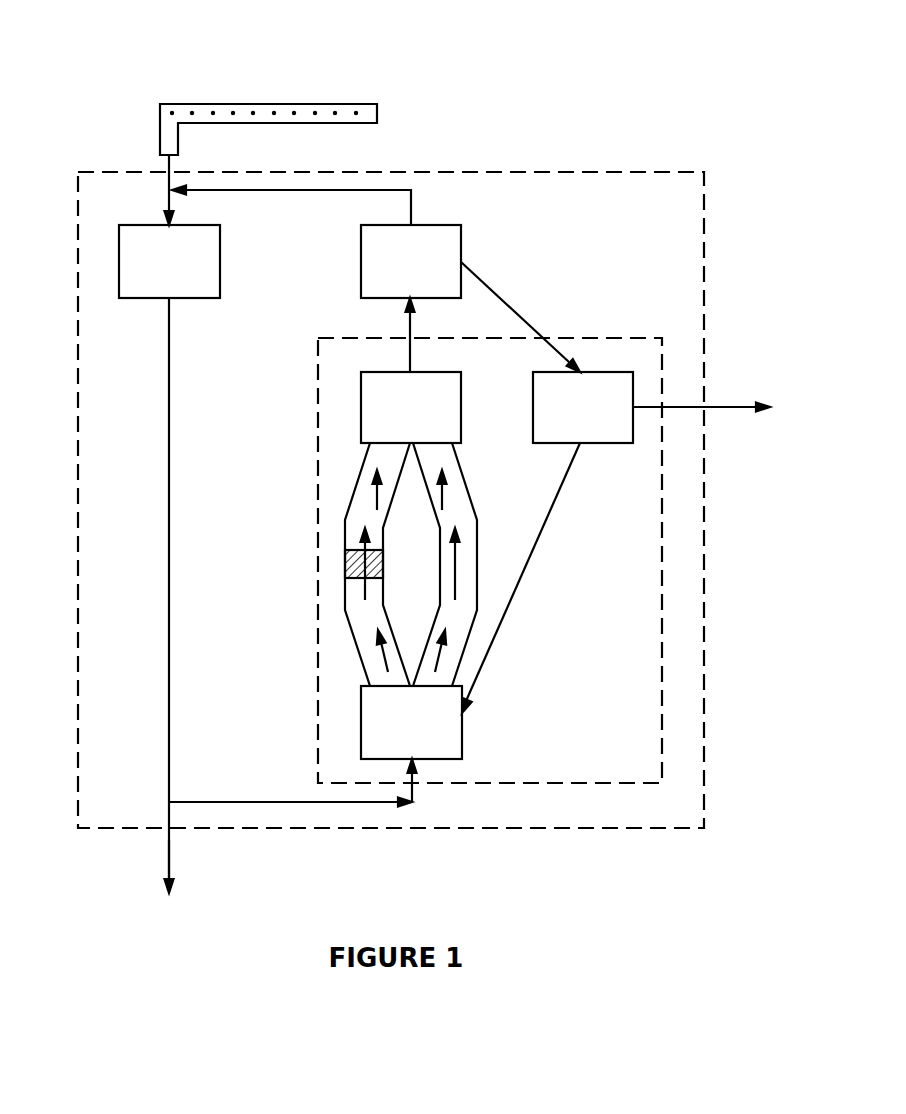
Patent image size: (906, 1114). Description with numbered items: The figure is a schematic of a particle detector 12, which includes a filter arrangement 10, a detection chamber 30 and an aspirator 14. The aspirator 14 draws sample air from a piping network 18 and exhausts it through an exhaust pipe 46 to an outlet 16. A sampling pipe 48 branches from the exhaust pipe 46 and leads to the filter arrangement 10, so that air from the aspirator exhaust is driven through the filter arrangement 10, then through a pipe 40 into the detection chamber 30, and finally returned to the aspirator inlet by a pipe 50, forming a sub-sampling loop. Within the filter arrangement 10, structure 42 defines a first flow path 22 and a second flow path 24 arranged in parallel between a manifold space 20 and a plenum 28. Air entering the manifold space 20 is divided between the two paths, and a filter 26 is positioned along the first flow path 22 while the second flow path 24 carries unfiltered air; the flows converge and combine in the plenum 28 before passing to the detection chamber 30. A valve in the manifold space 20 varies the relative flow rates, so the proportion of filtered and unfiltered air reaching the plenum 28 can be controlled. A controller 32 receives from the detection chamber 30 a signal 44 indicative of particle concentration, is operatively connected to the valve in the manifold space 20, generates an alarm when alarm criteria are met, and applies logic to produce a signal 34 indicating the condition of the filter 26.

The filter arrangement 10 is at (548, 330).
The particle detector 12 is at (708, 228).
The aspirator 14 is at (152, 276).
The outlet 16 is at (188, 878).
The piping network 18 is at (290, 90).
The manifold space 20 is at (394, 736).
The first flow path 22 is at (355, 640).
The second flow path 24 is at (467, 488).
The filter 26 is at (343, 563).
The plenum 28 is at (394, 422).
The detection chamber 30 is at (394, 276).
The controller 32 is at (566, 422).
The signal indicative of the condition of the filter 34 is at (701, 425).
The pipe 40 is at (403, 328).
The structure 42 is at (355, 410).
The signal 44 is at (520, 317).
The exhaust pipe 46 is at (167, 458).
The sampling pipe 48 is at (210, 800).
The pipe 50 is at (315, 185).